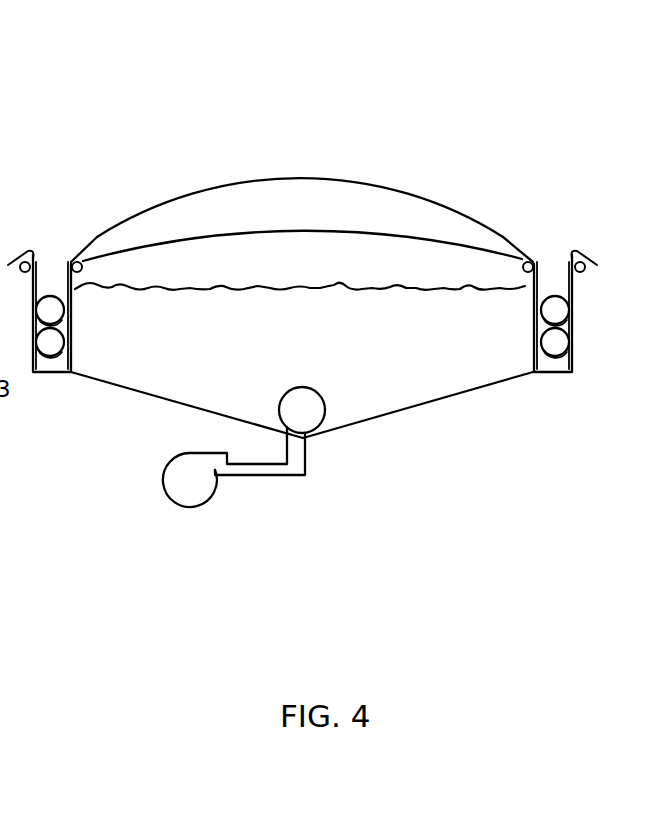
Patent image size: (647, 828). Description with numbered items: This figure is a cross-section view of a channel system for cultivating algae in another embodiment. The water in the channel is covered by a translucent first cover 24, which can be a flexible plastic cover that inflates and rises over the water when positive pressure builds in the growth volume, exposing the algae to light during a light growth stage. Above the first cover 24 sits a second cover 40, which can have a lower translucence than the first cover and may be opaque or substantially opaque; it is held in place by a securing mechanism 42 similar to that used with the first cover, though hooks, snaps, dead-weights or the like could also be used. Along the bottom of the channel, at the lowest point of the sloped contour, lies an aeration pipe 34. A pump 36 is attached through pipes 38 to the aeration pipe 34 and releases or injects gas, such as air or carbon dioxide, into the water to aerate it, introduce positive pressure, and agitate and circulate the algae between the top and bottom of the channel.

The second cover 40 is at (188, 187).
The first cover 24 is at (358, 235).
The securing mechanism 42 is at (56, 308).
The aeration pipe 34 is at (302, 410).
The pipes 38 is at (307, 453).
The pump 36 is at (190, 505).